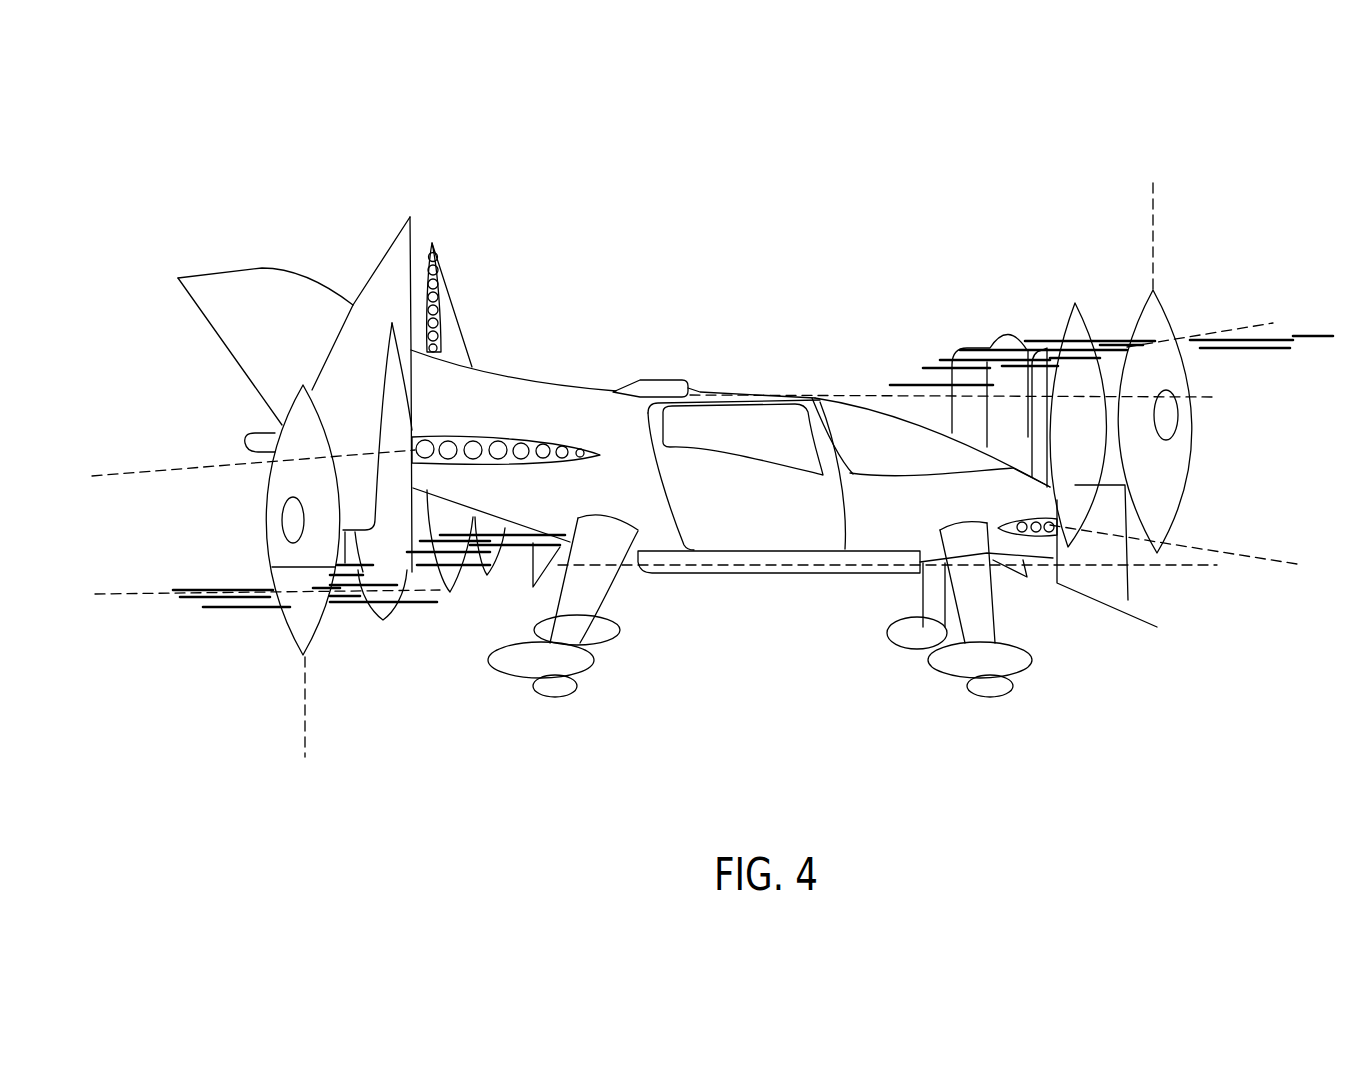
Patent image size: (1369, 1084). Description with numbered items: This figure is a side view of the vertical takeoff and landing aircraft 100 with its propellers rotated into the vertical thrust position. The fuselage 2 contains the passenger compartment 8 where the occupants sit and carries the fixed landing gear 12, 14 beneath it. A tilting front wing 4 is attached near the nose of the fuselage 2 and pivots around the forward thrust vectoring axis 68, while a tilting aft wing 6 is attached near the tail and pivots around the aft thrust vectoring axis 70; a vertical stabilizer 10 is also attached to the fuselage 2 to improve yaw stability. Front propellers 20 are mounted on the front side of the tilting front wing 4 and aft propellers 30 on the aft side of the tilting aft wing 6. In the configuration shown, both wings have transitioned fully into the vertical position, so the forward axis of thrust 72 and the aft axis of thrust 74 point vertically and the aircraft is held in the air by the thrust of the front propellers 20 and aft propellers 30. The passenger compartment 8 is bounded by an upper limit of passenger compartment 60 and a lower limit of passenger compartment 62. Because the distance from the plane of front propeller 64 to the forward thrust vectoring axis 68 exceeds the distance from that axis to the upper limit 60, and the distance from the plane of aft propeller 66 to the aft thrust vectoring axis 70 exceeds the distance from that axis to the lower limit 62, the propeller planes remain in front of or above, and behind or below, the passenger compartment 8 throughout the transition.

The vertical takeoff and landing aircraft 100 is at (908, 171).
The fuselage 2 is at (702, 392).
The tilting front wing 4 is at (1092, 593).
The tilting aft wing 6 is at (402, 238).
The passenger compartment 8 is at (760, 540).
The vertical stabilizer 10 is at (277, 280).
The fixed landing gear 12 is at (553, 698).
The fixed landing gear 14 is at (992, 698).
The front propellers 20 is at (893, 387).
The aft propellers 30 is at (205, 607).
The upper limit of passenger compartment 60 is at (840, 393).
The lower limit of passenger compartment 62 is at (712, 563).
The plane of front propeller 64 is at (1260, 323).
The plane of aft propeller 66 is at (133, 593).
The forward thrust vectoring axis 68 is at (1275, 556).
The aft thrust vectoring axis 70 is at (92, 476).
The forward axis of thrust 72 is at (1160, 252).
The aft axis of thrust 74 is at (312, 718).